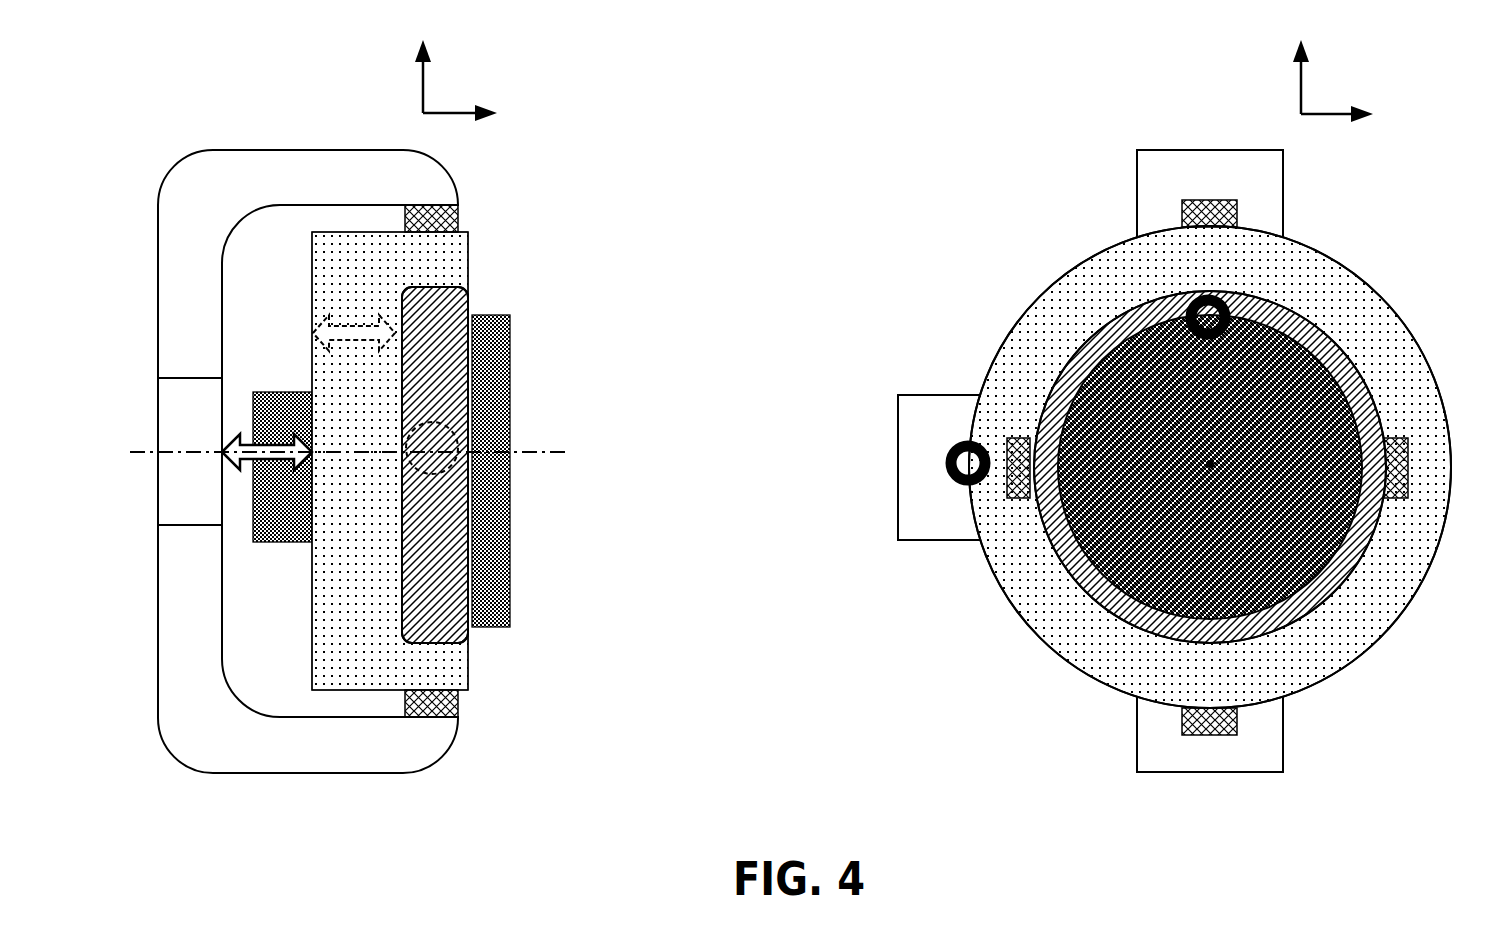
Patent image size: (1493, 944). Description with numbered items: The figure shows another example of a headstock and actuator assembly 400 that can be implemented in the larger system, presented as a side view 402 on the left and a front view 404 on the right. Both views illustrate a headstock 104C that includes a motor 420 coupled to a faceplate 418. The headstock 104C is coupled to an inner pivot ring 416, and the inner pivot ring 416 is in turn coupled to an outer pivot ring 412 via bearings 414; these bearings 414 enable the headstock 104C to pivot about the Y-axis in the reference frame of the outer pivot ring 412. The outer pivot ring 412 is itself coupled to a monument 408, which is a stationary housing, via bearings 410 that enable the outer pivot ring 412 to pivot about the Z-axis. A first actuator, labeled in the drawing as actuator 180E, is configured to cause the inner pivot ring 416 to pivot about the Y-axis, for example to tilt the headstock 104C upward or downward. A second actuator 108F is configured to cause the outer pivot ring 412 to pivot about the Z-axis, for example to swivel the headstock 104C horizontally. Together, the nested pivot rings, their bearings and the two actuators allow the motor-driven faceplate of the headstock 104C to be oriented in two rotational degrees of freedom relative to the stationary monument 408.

The headstock and actuator assembly 400 is at (158, 88).
The side view 402 is at (650, 105).
The front view 404 is at (925, 121).
The headstock 104C is at (280, 339).
The monument 408 is at (1193, 168).
The bearings 410 is at (1182, 214).
The outer pivot ring 412 is at (1118, 260).
The actuator 180E is at (1168, 333).
The second actuator 108F is at (278, 436).
The bearings 414 is at (1018, 462).
The inner pivot ring 416 is at (1060, 572).
The faceplate 418 is at (1192, 608).
The motor 420 is at (277, 534).